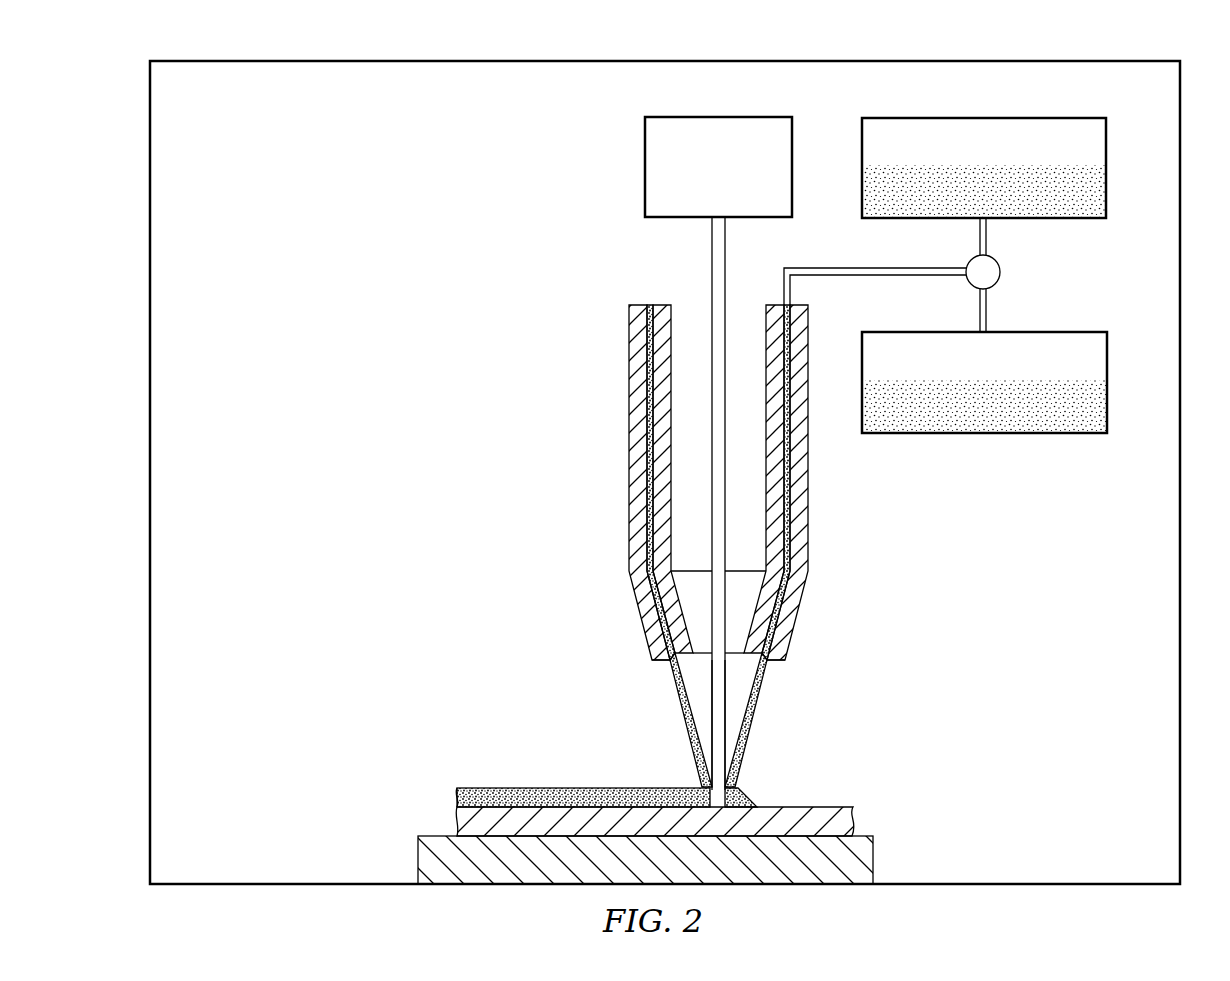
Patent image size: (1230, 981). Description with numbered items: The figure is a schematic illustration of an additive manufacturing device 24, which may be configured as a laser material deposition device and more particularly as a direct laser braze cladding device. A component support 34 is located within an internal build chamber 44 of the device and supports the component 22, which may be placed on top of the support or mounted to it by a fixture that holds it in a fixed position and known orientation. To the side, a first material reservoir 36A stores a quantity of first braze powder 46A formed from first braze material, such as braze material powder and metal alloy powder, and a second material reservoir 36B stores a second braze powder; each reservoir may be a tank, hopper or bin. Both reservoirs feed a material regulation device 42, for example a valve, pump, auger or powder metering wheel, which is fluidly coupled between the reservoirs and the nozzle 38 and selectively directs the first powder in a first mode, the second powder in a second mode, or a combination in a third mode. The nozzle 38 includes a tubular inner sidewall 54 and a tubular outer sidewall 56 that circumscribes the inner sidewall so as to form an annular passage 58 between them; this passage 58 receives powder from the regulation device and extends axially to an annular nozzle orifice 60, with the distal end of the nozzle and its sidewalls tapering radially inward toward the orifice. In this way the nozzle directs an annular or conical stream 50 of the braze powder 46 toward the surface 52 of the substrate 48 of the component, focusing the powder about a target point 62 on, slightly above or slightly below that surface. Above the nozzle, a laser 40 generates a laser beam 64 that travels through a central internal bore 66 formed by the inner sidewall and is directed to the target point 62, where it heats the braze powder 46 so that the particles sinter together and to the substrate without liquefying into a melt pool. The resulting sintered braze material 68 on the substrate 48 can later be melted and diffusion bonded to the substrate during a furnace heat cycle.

The component 22 is at (637, 779).
The additive manufacturing device 24 is at (1140, 58).
The component support 34 is at (873, 862).
The first material reservoir 36A is at (1014, 171).
The second material reservoir 36B is at (1107, 355).
The nozzle 38 is at (709, 546).
The laser 40 is at (645, 172).
The material regulation device 42 is at (1001, 272).
The internal build chamber 44 is at (401, 461).
The braze powder 46 is at (690, 732).
The first braze powder 46A is at (1100, 190).
The substrate 48 is at (853, 815).
The stream 50 is at (758, 710).
The substrate surface 52 is at (532, 788).
The inner sidewall 54 is at (765, 520).
The outer sidewall 56 is at (809, 515).
The passage 58 is at (650, 355).
The nozzle orifice 60 is at (668, 662).
The target point 62 is at (721, 813).
The laser beam 64 is at (709, 710).
The internal bore 66 is at (688, 303).
The sintered braze material 68 is at (462, 788).